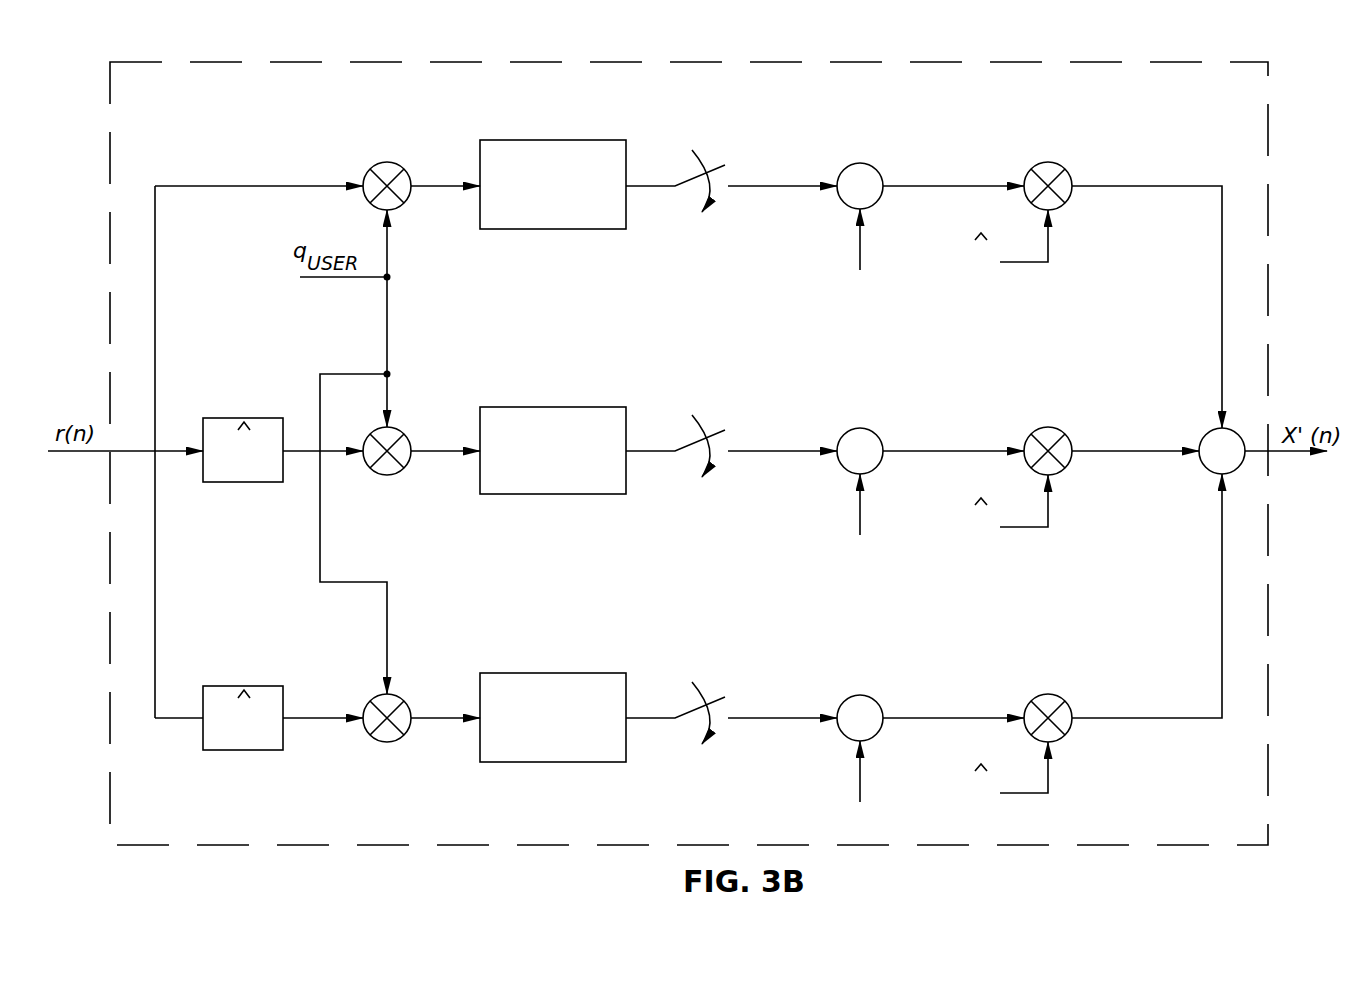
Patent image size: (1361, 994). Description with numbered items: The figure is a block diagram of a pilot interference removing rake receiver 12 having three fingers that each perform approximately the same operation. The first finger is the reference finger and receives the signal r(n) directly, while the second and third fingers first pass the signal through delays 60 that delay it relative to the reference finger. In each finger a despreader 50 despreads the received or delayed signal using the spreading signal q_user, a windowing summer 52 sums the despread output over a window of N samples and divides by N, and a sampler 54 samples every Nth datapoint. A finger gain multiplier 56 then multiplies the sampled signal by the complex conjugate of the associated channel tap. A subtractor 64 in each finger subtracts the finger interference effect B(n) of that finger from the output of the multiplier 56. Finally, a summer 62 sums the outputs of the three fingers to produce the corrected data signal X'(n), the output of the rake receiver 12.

The rake receiver 12 is at (1268, 257).
The despreader 50 is at (378, 165).
The windowing summer 52 is at (560, 140).
The sampler 54 is at (730, 170).
The finger gain multiplier 56 is at (1058, 162).
The delay 60 is at (252, 418).
The summer 62 is at (1205, 470).
The subtractor 64 is at (868, 165).